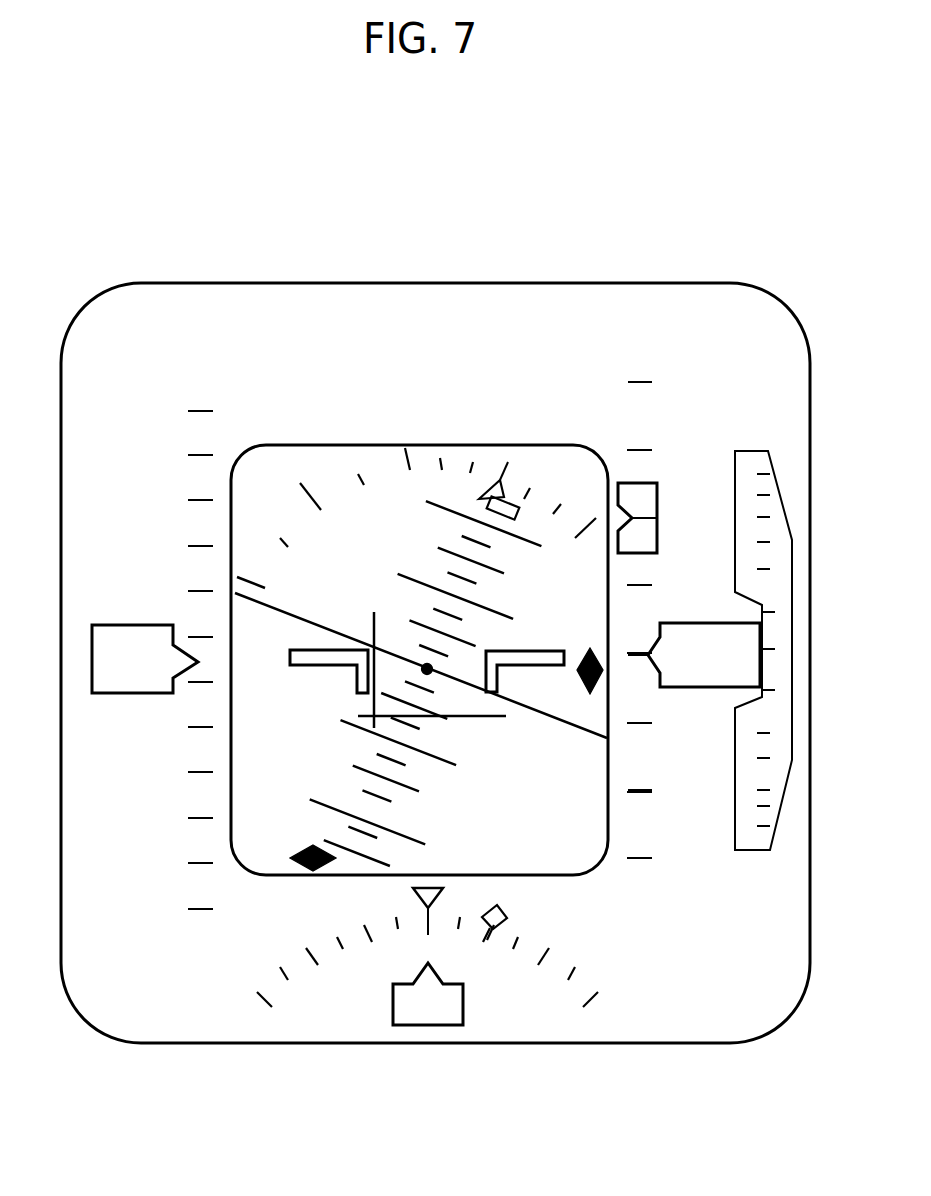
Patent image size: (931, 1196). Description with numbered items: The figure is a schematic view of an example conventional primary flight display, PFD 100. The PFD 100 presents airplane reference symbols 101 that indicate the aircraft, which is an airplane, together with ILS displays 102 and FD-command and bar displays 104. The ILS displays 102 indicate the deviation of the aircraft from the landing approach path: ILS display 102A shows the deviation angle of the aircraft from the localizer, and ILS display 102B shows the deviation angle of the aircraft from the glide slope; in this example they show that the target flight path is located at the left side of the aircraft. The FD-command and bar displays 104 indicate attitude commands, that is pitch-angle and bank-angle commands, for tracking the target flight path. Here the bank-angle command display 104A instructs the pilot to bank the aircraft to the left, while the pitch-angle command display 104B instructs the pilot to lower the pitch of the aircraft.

The PFD 100 is at (420, 210).
The airplane reference symbols 101 is at (298, 667).
The ILS displays 102 is at (479, 793).
The ILS display 102A is at (292, 866).
The ILS display 102B is at (600, 678).
The FD command and bar displays 104 is at (432, 688).
The bank-angle command display 104A is at (376, 624).
The pitch-angle command display 104B is at (482, 718).